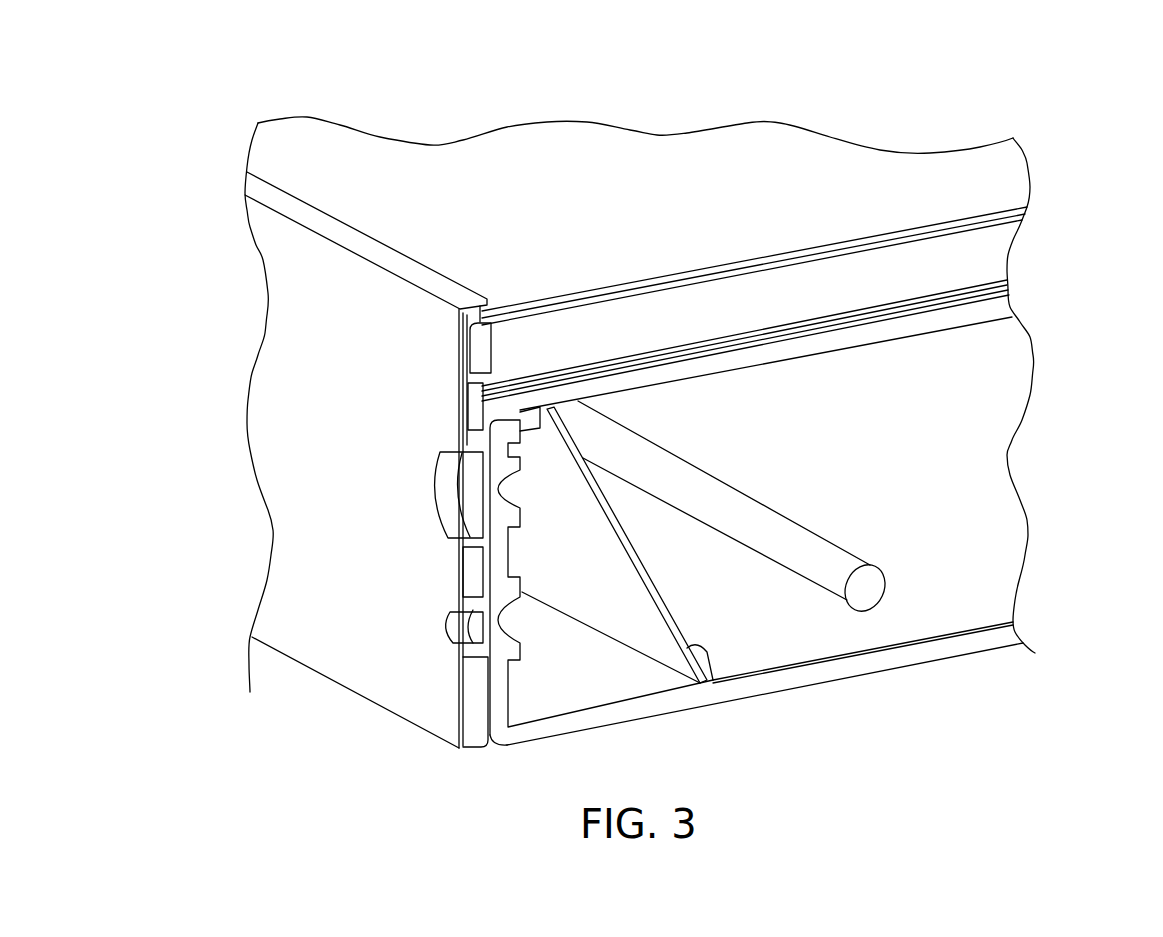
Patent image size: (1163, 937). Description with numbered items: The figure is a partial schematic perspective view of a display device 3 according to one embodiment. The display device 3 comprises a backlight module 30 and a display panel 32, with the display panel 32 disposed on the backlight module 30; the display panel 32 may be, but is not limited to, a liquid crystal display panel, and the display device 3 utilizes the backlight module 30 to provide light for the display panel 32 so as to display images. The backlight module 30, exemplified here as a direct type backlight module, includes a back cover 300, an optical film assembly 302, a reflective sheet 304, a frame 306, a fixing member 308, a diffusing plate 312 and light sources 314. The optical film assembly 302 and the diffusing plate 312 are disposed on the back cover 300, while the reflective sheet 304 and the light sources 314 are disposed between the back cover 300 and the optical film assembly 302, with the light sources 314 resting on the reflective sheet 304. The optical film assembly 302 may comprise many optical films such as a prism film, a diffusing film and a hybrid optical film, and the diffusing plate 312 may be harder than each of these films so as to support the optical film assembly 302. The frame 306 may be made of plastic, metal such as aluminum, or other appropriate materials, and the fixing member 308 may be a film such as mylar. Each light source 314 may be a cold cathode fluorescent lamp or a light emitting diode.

The display device 3 is at (992, 82).
The backlight module 30 is at (1046, 605).
The display panel 32 is at (669, 172).
The back cover 300 is at (932, 647).
The optical film assembly 302 is at (983, 257).
The reflective sheet 304 is at (713, 681).
The frame 306 is at (477, 728).
The fixing member 308 is at (465, 378).
The diffusing plate 312 is at (990, 305).
The light source 314 is at (822, 577).